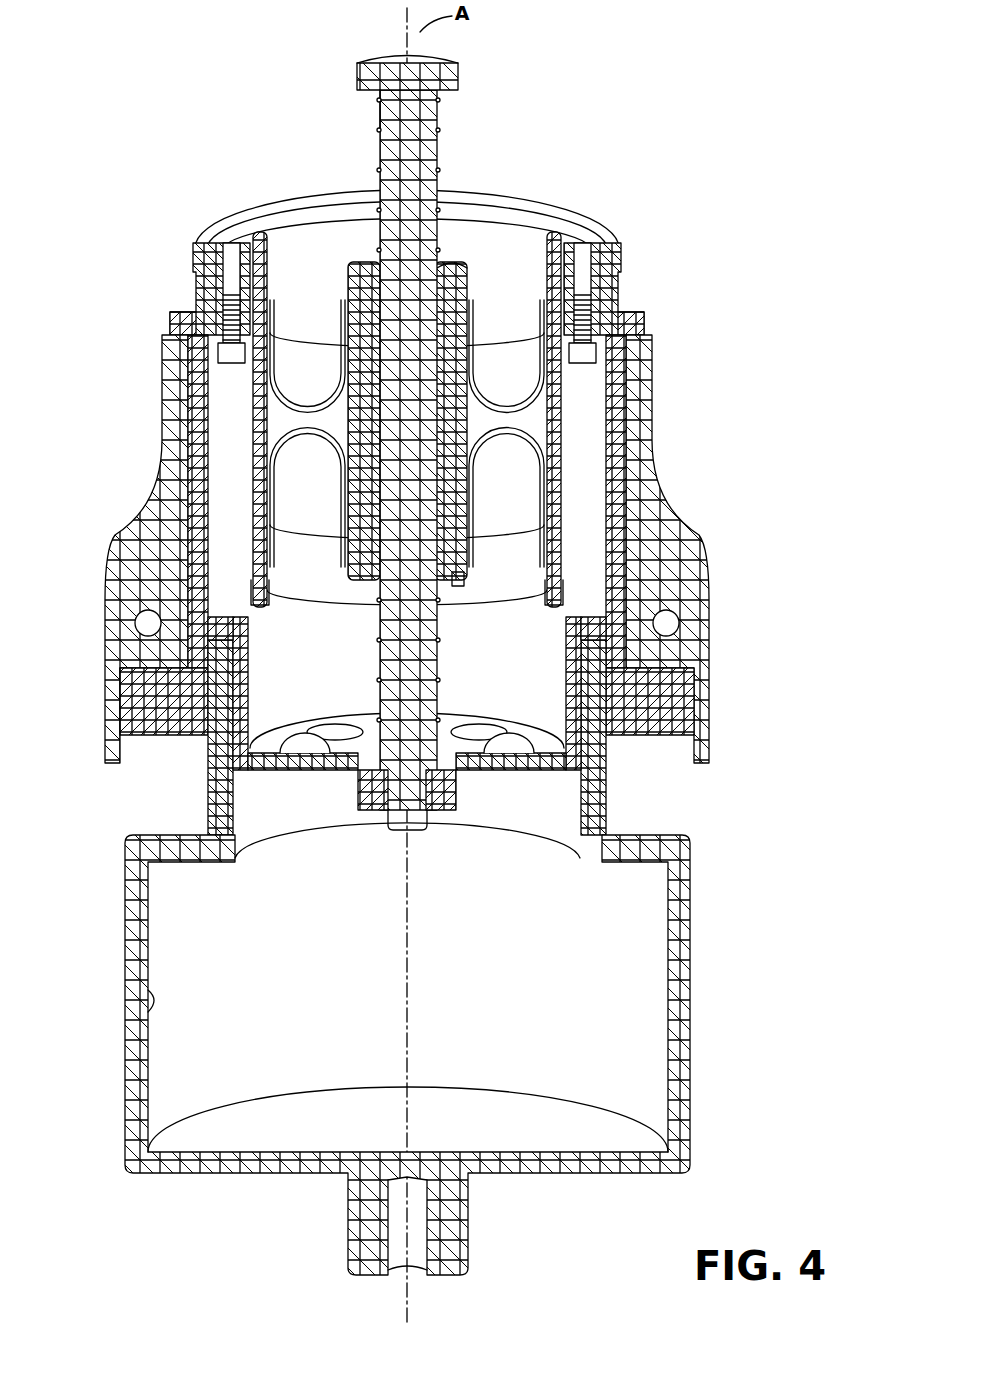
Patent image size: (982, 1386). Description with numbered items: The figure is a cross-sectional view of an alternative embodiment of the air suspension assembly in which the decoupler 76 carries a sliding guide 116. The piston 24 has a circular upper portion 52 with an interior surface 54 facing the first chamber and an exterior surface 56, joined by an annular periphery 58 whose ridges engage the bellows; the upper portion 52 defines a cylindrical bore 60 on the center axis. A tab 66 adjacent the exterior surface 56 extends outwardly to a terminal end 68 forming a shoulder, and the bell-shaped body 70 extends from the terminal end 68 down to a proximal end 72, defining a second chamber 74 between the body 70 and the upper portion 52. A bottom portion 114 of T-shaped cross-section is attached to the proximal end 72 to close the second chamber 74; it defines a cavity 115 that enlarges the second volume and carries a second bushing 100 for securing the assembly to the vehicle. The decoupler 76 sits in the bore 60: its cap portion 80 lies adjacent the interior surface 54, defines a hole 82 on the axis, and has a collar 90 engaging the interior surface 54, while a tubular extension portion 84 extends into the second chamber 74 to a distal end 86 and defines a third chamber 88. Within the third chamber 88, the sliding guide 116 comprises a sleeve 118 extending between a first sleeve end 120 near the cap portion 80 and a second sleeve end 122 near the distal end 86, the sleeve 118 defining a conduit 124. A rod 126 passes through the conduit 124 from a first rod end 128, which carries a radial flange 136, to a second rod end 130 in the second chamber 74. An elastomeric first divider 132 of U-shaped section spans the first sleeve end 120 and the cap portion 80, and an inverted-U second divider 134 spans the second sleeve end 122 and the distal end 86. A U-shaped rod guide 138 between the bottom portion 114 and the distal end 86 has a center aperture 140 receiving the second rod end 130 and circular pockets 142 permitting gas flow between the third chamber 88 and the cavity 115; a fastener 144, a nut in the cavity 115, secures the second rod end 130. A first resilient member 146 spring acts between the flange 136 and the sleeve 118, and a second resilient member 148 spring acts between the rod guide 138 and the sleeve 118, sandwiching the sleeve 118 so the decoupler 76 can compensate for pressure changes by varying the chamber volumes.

The piston 24 is at (703, 547).
The upper portion 52 is at (210, 240).
The interior surface 54 is at (584, 226).
The exterior surface 56 is at (616, 306).
The periphery 58 is at (232, 271).
The bore 60 is at (598, 246).
The tab 66 is at (178, 319).
The terminal end 68 is at (636, 313).
The body 70 is at (626, 446).
The proximal end 72 is at (674, 736).
The second chamber 74 is at (602, 598).
The decoupler 76 is at (300, 215).
The cap portion 80 is at (272, 312).
The hole 82 is at (252, 236).
The extension portion 84 is at (208, 406).
The distal end 86 is at (263, 602).
The third chamber 88 is at (268, 416).
The collar 90 is at (216, 342).
The second bushing 100 is at (456, 1266).
The bottom portion 114 is at (690, 994).
The cavity 115 is at (158, 1002).
The sliding guide 116 is at (445, 253).
The sleeve 118 is at (449, 352).
The first sleeve end 120 is at (457, 264).
The second sleeve end 122 is at (453, 586).
The conduit 124 is at (436, 372).
The rod 126 is at (424, 122).
The first rod end 128 is at (395, 95).
The second rod end 130 is at (411, 832).
The first divider 132 is at (549, 400).
The second divider 134 is at (551, 456).
The flange 136 is at (446, 78).
The rod guide 138 is at (541, 766).
The center aperture 140 is at (431, 790).
The pockets 142 is at (294, 746).
The fastener 144 is at (368, 806).
The first resilient member 146 is at (377, 129).
The second resilient member 148 is at (441, 702).